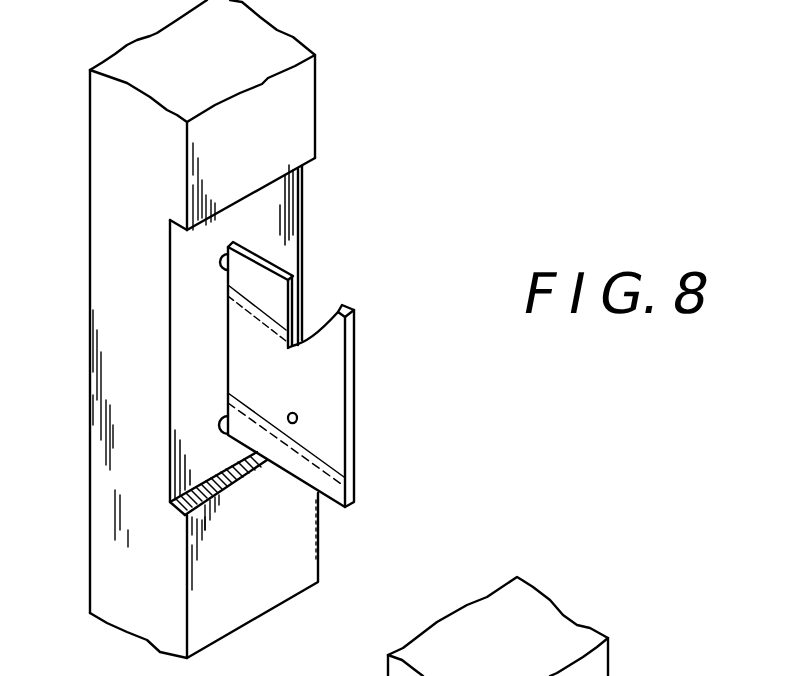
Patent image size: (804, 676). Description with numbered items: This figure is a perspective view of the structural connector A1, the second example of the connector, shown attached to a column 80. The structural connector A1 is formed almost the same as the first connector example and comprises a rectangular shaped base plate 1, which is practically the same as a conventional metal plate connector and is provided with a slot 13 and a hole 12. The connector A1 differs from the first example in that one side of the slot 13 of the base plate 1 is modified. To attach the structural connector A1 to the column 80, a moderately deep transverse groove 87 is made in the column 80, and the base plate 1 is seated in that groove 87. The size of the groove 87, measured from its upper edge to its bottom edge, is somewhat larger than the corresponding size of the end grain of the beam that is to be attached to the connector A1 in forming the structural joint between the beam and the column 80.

The column 80 is at (100, 257).
The transverse groove 87 is at (275, 205).
The base plate 1 is at (328, 373).
The slot 13 is at (313, 317).
The hole 12 is at (298, 421).
The structural connector A1 is at (326, 367).